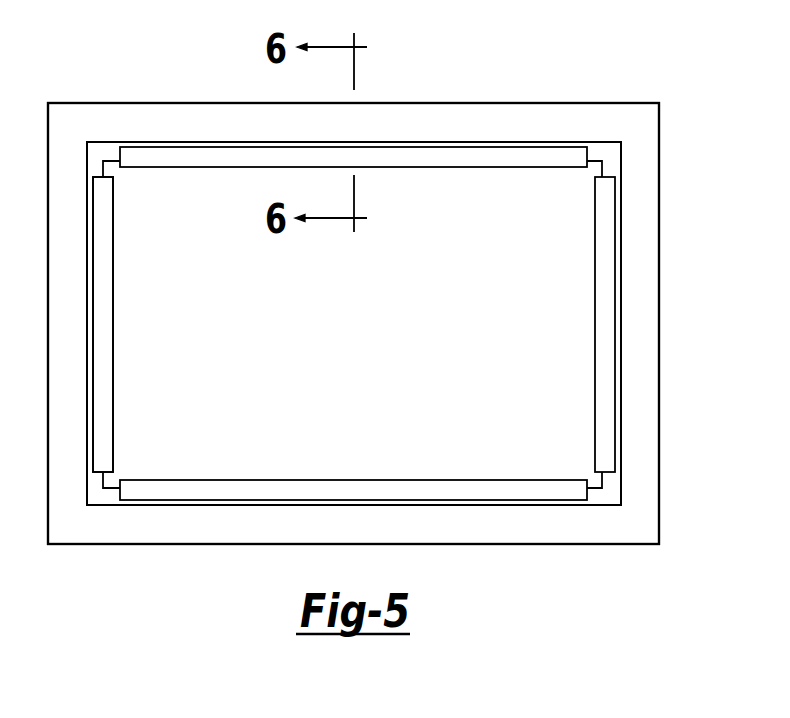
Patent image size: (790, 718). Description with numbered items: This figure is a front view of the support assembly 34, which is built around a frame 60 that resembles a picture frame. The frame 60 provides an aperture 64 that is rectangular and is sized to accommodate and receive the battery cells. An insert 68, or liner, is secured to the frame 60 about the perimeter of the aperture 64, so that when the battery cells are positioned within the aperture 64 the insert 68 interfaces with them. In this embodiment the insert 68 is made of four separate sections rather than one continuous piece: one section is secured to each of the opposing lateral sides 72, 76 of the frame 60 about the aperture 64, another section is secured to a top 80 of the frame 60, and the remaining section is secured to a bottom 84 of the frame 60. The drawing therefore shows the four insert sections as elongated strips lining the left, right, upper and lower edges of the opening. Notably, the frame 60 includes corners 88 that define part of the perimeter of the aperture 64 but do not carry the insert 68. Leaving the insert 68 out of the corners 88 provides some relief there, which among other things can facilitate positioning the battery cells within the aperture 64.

The support assembly 34 is at (636, 70).
The frame 60 is at (168, 123).
The aperture 64 is at (263, 456).
The insert 68 is at (113, 373).
The lateral side 72 is at (121, 306).
The lateral side 76 is at (587, 306).
The top 80 is at (457, 178).
The bottom 84 is at (454, 469).
The corners 88 is at (126, 183).